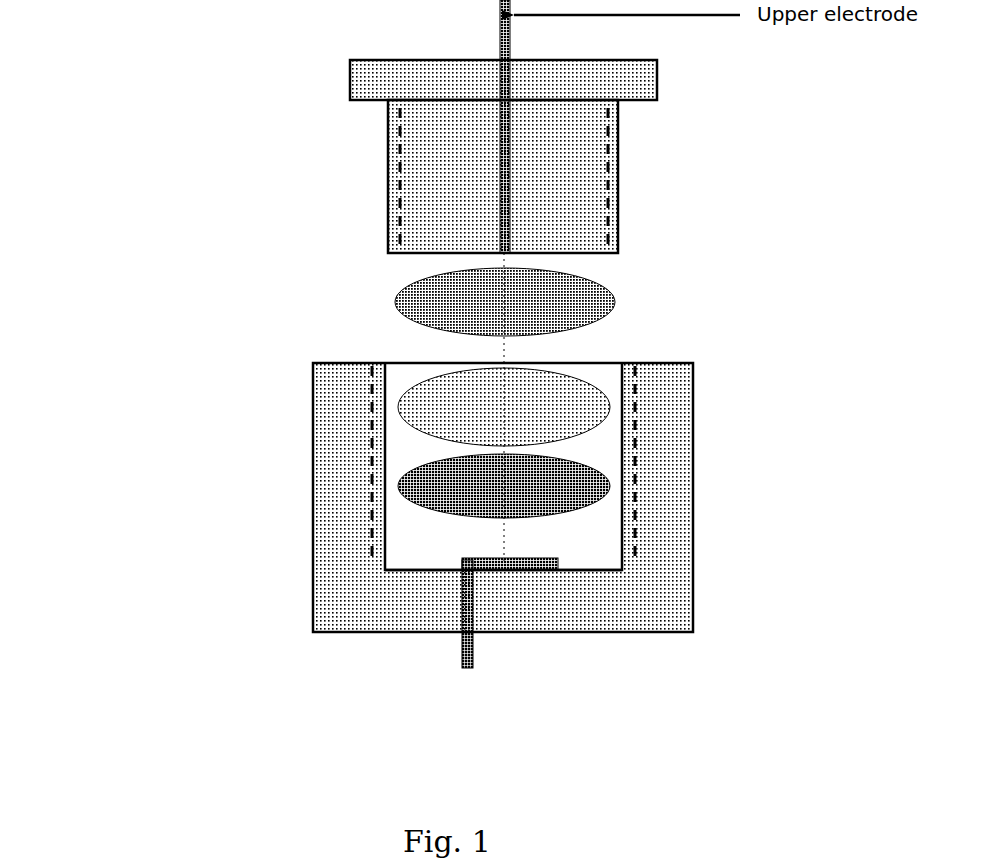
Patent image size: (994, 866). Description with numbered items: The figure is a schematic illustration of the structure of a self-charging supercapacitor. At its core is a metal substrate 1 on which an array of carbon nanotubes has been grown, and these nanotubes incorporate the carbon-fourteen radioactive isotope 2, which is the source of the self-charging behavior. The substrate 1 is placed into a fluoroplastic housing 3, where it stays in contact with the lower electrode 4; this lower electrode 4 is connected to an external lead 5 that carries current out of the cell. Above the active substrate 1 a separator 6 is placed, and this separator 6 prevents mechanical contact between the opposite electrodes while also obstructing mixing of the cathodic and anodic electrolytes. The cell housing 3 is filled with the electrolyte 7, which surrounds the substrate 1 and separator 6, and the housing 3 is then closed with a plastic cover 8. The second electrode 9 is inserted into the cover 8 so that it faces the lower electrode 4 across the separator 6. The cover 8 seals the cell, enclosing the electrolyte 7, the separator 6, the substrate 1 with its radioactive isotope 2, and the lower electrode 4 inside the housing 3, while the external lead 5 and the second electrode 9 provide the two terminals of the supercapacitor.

The metal substrate 1 is at (398, 488).
The C-14 radioactive isotope 2 is at (580, 488).
The fluoroplastic housing 3 is at (748, 553).
The lower electrode 4 is at (455, 648).
The external lead 5 is at (475, 689).
The separator 6 is at (585, 409).
The electrolyte 7 is at (585, 552).
The plastic cover 8 is at (740, 81).
The second electrode 9 is at (610, 300).